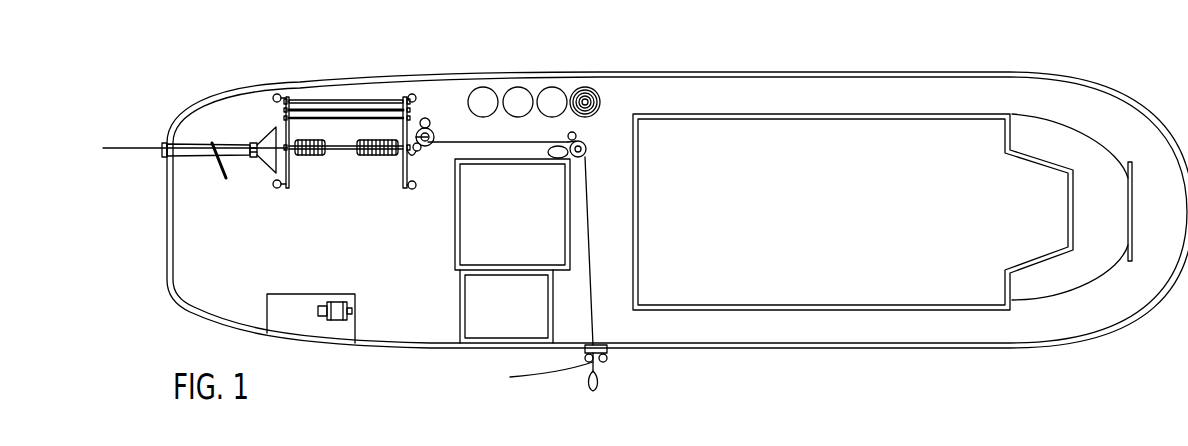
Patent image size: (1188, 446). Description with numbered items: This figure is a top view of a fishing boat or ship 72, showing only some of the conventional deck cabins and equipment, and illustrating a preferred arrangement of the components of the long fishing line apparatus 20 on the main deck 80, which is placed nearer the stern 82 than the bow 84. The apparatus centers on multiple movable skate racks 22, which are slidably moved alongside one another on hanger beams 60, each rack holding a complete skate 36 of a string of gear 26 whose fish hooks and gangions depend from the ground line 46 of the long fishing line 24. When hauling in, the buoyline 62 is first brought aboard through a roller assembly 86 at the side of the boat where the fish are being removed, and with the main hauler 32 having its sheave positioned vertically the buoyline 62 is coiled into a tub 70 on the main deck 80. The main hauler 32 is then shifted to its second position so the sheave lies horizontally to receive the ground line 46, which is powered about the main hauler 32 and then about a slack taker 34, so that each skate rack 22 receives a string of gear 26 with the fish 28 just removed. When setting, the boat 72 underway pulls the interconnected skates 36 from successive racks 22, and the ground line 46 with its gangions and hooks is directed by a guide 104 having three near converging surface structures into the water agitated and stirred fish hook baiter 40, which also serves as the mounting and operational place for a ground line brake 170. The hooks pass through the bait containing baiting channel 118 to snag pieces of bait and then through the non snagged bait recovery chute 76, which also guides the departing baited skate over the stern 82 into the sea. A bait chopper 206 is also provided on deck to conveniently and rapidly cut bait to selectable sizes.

The long fishing line apparatus 20 is at (342, 100).
The movable skate rack 22 is at (305, 100).
The fishing line 24 is at (143, 144).
The string of gear 26 is at (595, 245).
The fish 28 is at (598, 386).
The main hauler 32 is at (591, 140).
The slack taker 34 is at (431, 129).
The skate 36 is at (378, 157).
The fish hook baiter 40 is at (240, 136).
The ground line 46 is at (597, 321).
The hanger beams 60 is at (404, 97).
The buoyline 62 is at (583, 89).
The tub 70 is at (507, 86).
The boat or ship 72 is at (666, 69).
The recovery chute 76 is at (187, 158).
The main deck 80 is at (292, 263).
The stern 82 is at (168, 284).
The bow 84 is at (1122, 316).
The roller assembly 86 is at (608, 353).
The guide 104 is at (266, 170).
The baiting channel 118 is at (243, 158).
The ground line brake 170 is at (211, 168).
The bait chopper 206 is at (353, 313).